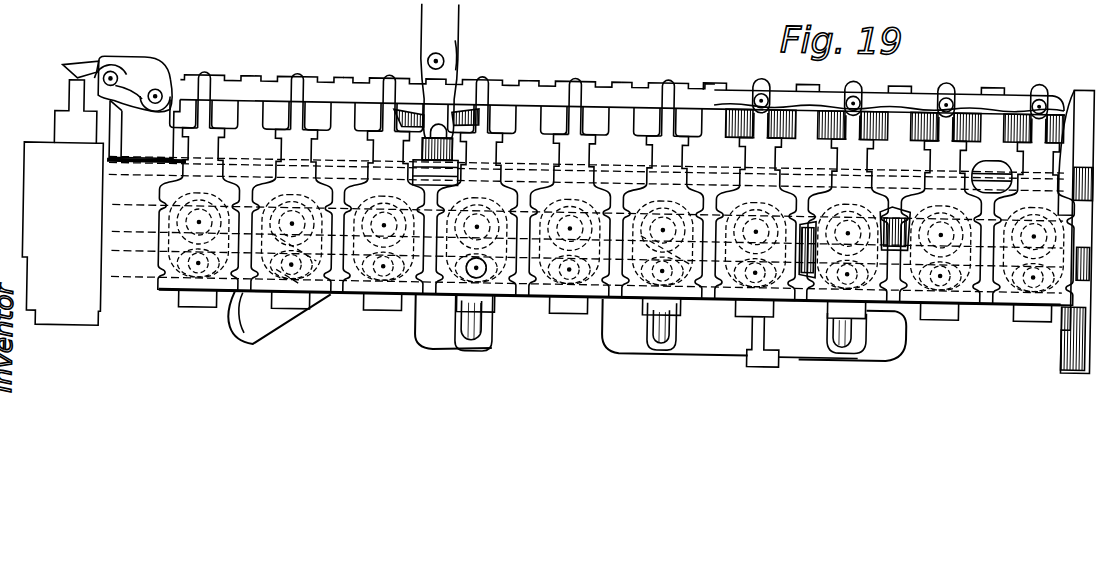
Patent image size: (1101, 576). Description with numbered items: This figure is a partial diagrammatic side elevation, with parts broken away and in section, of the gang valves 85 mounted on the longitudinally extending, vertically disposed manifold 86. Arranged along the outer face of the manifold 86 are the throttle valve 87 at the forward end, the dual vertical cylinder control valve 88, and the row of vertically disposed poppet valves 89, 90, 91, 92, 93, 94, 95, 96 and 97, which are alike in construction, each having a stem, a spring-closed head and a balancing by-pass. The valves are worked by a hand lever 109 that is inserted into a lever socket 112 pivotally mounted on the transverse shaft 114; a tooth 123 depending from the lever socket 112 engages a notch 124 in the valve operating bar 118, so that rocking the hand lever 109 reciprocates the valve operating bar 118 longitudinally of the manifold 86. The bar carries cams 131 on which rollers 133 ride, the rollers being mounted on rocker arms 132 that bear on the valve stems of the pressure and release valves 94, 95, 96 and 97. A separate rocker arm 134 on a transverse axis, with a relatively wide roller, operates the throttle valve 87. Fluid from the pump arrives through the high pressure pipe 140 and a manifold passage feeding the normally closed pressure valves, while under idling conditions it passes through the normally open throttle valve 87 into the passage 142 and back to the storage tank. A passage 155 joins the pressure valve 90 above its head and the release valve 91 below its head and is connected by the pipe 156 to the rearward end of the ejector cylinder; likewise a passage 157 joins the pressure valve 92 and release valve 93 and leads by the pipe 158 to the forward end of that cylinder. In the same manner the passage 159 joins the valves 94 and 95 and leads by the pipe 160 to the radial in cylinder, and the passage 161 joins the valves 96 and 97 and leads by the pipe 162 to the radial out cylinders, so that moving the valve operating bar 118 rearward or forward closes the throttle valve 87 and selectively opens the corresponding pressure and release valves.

The gang valves 85 is at (230, 77).
The manifold 86 is at (243, 339).
The throttle valve 87 is at (75, 329).
The dual vertical cylinder control valve 88 is at (187, 308).
The poppet valve 89 is at (302, 311).
The pressure valve 90 is at (382, 307).
The release valve 91 is at (498, 298).
The pressure valve 92 is at (570, 307).
The release valve 93 is at (687, 301).
The pressure valve 94 is at (793, 350).
The release valve 95 is at (873, 301).
The pressure valve 96 is at (957, 310).
The release valve 97 is at (1013, 309).
The hand lever 109 is at (437, 95).
The lever socket 112 is at (460, 45).
The transverse shaft 114 is at (425, 55).
The valve operating bar 118 is at (750, 72).
The tooth 123 is at (405, 91).
The notch 124 is at (462, 90).
The cams 131 is at (870, 78).
The rocker arms 132 is at (760, 70).
The rollers 133 is at (820, 125).
The rocker arm 134 is at (95, 62).
The high pressure pipe 140 is at (973, 293).
The passage 142 is at (877, 131).
The passage 155 is at (442, 266).
The pipe 156 is at (477, 342).
The passage 157 is at (617, 256).
The pipe 158 is at (665, 339).
The passage 159 is at (835, 332).
The pipe 160 is at (840, 336).
The passage 161 is at (1050, 322).
The pipe 162 is at (1063, 358).